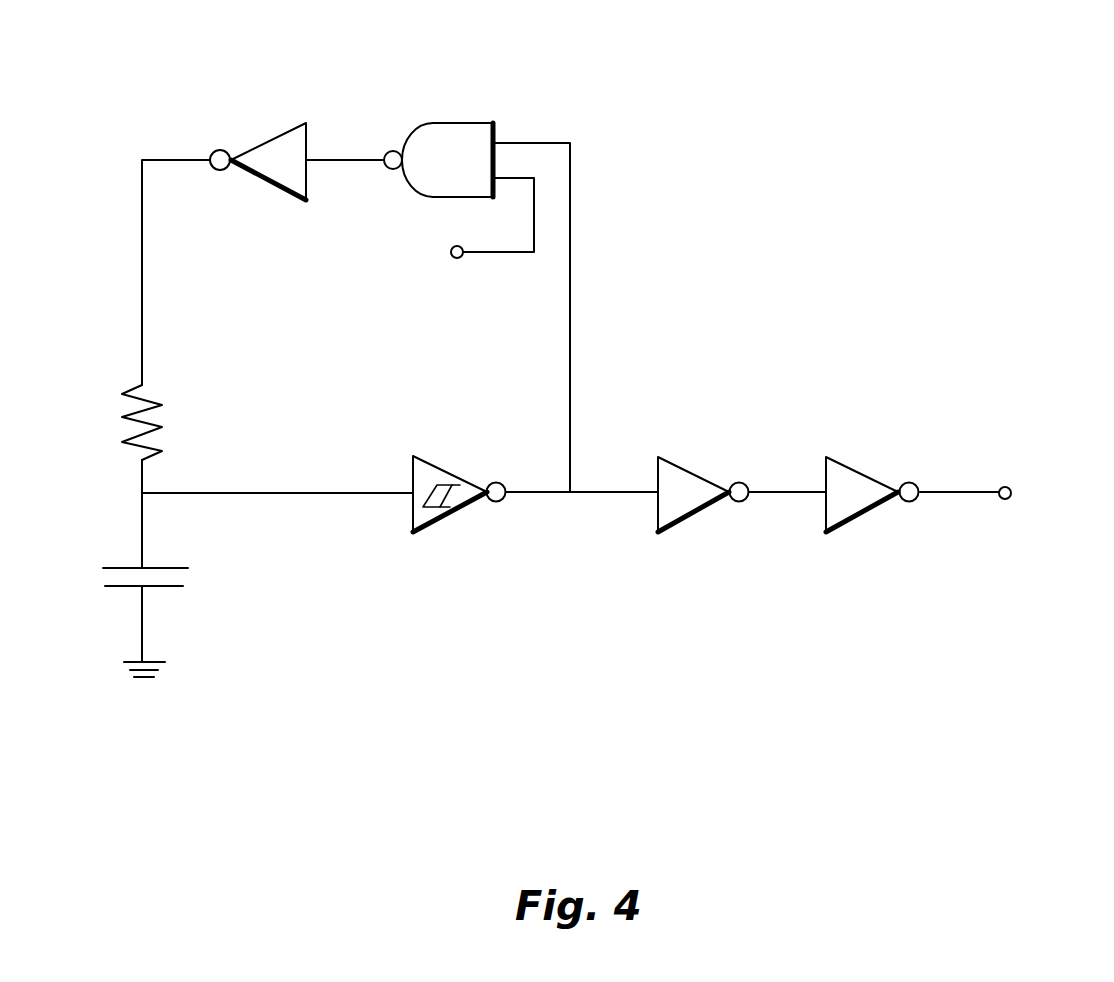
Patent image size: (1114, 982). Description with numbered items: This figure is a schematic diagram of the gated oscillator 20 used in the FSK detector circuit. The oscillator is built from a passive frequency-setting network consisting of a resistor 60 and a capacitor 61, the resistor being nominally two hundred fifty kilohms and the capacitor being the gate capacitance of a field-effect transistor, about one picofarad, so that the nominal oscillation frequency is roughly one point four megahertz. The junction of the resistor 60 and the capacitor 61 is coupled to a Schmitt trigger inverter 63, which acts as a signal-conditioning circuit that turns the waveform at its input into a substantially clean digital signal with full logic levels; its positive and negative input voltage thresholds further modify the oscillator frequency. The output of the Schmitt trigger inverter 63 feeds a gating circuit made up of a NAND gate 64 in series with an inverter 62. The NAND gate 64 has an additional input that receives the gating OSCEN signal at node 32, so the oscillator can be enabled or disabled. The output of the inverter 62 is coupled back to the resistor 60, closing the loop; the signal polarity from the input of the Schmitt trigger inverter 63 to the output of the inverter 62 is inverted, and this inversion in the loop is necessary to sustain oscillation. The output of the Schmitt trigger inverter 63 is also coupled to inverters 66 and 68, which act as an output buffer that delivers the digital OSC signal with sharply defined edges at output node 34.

The gated oscillator 20 is at (800, 259).
The node 32 is at (455, 258).
The output node 34 is at (1011, 498).
The resistor 60 is at (123, 418).
The capacitor 61 is at (119, 568).
The inverter 62 is at (283, 130).
The Schmitt trigger inverter 63 is at (450, 515).
The NAND gate 64 is at (478, 122).
The inverter 66 is at (704, 505).
The inverter 68 is at (863, 513).